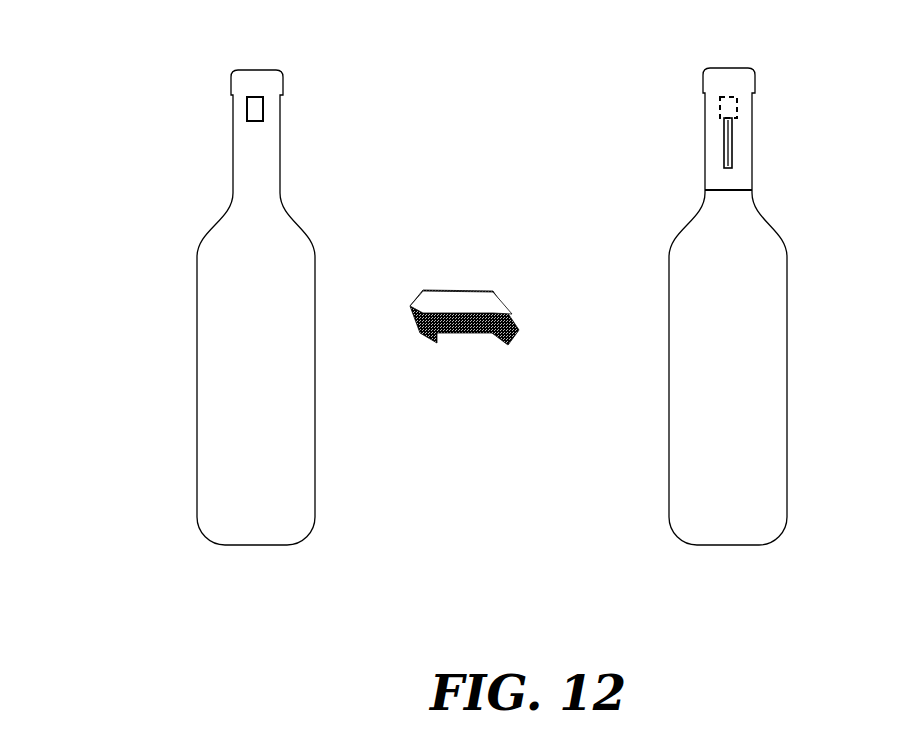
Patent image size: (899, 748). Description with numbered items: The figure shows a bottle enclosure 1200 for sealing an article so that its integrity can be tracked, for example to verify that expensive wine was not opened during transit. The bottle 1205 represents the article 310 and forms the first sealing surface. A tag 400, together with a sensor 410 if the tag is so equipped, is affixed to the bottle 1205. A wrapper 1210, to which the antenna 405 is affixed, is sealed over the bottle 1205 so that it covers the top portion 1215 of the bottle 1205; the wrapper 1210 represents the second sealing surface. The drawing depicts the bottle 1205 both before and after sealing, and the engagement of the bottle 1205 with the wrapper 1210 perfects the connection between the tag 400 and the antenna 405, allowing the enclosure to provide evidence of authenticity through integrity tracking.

The bottle enclosure 1200 is at (100, 47).
The article 310 is at (131, 273).
The bottle 1205 is at (207, 343).
The top portion 1215 is at (280, 144).
The tag 400 is at (435, 92).
The sensor 410 is at (246, 112).
The antenna 405 is at (723, 143).
The wrapper 1210 is at (712, 178).